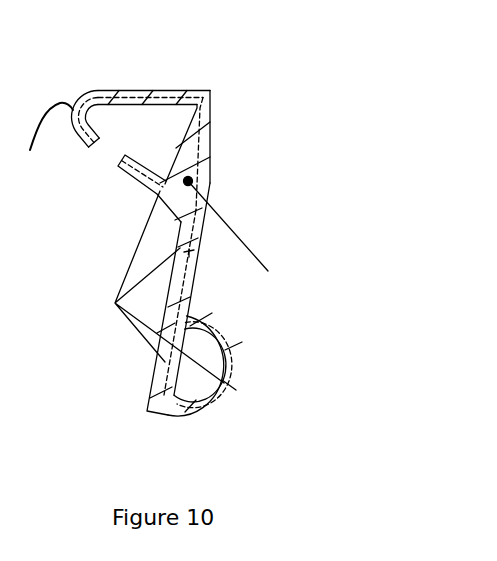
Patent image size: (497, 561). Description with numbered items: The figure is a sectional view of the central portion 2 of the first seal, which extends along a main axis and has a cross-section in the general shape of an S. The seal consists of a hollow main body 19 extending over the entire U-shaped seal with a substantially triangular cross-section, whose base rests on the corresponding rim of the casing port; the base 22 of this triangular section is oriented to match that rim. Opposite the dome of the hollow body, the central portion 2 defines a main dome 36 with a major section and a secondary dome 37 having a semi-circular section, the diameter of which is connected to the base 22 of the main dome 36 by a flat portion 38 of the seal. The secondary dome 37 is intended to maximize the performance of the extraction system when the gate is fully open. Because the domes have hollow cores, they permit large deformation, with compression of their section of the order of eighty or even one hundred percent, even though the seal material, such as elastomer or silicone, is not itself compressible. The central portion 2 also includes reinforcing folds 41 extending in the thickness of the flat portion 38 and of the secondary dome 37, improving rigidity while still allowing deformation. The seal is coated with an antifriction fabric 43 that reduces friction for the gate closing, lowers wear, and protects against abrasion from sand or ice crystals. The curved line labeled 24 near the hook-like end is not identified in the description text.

The central portion 2 is at (296, 204).
The hollow main body 19 is at (116, 86).
The main dome 36 is at (83, 88).
The support edge 24 is at (38, 142).
The base 22 is at (190, 125).
The antifriction fabric 43 is at (212, 160).
The flat portion 38 is at (197, 255).
The secondary dome 37 is at (241, 396).
The folds 41 is at (115, 303).